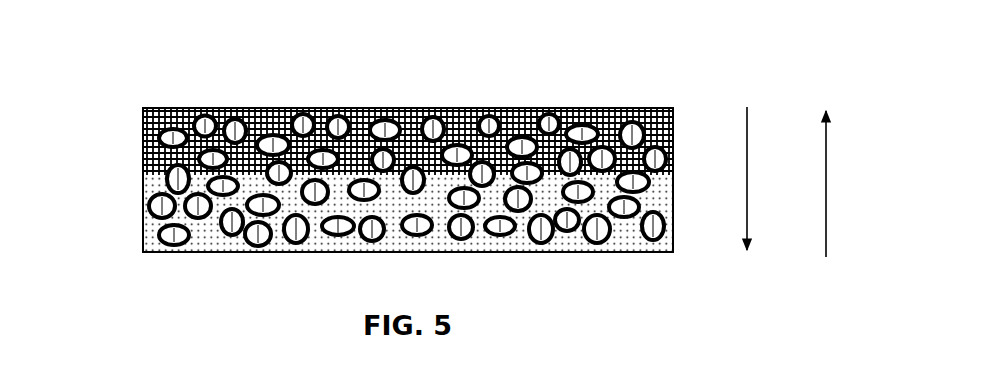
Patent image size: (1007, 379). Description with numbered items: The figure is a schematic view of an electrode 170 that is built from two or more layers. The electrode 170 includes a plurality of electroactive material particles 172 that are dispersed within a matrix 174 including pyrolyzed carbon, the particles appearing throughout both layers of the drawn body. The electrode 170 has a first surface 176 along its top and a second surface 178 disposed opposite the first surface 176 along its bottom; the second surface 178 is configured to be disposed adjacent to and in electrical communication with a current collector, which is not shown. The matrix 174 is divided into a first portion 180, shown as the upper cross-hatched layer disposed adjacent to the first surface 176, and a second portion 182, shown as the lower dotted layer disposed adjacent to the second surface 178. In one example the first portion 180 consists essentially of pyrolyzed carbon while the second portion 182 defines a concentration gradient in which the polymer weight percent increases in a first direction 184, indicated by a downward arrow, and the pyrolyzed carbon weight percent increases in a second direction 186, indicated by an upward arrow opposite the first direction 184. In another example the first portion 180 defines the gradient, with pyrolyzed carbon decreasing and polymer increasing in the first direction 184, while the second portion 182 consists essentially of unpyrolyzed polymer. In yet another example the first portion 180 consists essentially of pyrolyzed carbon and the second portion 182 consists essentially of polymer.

The electrode 170 is at (131, 83).
The electroactive material particles 172 is at (242, 112).
The matrix 174 is at (489, 105).
The first surface 176 is at (648, 107).
The second surface 178 is at (617, 253).
The first portion 180 is at (141, 141).
The second portion 182 is at (141, 211).
The first direction 184 is at (747, 212).
The second direction 186 is at (826, 245).